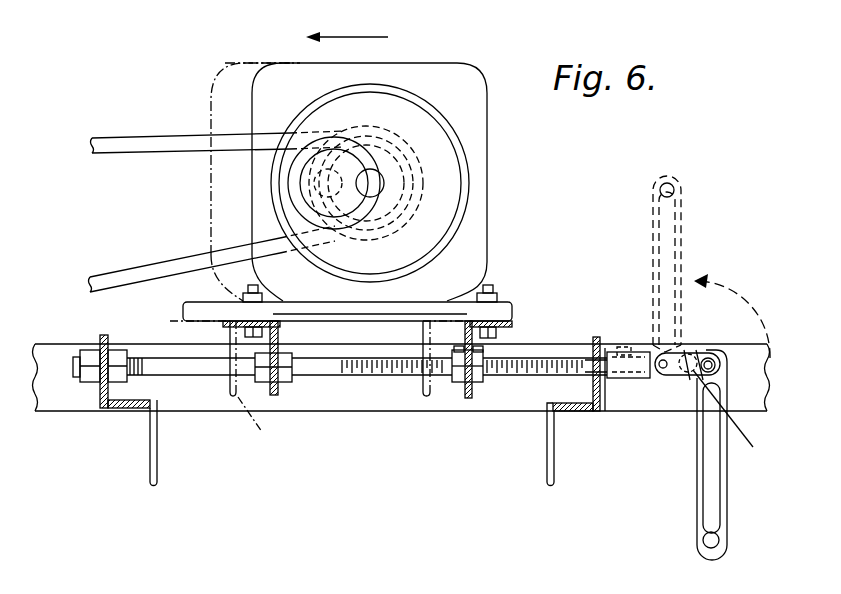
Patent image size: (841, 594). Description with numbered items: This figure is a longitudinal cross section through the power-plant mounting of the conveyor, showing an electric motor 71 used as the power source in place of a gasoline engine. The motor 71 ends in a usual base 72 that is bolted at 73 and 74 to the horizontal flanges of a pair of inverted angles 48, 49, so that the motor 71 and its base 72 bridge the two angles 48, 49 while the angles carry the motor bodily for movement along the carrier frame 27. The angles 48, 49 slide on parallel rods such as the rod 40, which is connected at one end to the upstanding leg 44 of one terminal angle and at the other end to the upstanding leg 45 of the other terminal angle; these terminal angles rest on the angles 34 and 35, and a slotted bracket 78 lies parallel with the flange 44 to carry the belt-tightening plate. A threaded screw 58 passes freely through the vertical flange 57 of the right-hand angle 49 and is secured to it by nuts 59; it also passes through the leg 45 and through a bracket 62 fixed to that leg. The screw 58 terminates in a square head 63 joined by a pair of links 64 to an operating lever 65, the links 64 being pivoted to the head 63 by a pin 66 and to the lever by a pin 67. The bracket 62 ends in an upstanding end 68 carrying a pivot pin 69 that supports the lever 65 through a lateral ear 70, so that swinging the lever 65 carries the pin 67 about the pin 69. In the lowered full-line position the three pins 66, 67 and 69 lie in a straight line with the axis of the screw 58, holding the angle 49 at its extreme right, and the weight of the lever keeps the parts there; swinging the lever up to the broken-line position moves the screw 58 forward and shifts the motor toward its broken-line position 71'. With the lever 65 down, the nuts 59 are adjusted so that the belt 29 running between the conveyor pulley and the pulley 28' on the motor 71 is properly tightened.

The electric motor 71 is at (356, 159).
The shifted position of motor housing 71' is at (206, 182).
The belt 29 is at (121, 140).
The pulley 28' is at (356, 183).
The base 72 is at (468, 290).
The bolt 73 is at (245, 291).
The bolt 74 is at (498, 293).
The inverted angle 48 is at (281, 400).
The carrier frame 27 is at (135, 452).
The upstanding leg 44 is at (108, 341).
The angle 34 is at (158, 463).
The bracket 78 is at (100, 390).
The rod 40 is at (190, 375).
The inverted angle 49 is at (415, 390).
The vertical flange 57 is at (462, 386).
The nuts 59 is at (476, 349).
The upstanding leg 45 is at (588, 384).
The angle 35 is at (547, 455).
The pin 66 is at (650, 372).
The threaded screw 58 is at (549, 358).
The bracket 62 is at (632, 402).
The square head 63 is at (620, 348).
The pivot pin 69 is at (689, 354).
The upstanding end 68 is at (713, 352).
The lateral ear 70 is at (688, 374).
The links 64 is at (725, 416).
The pin 67 is at (714, 367).
The operating lever 65 is at (655, 246).